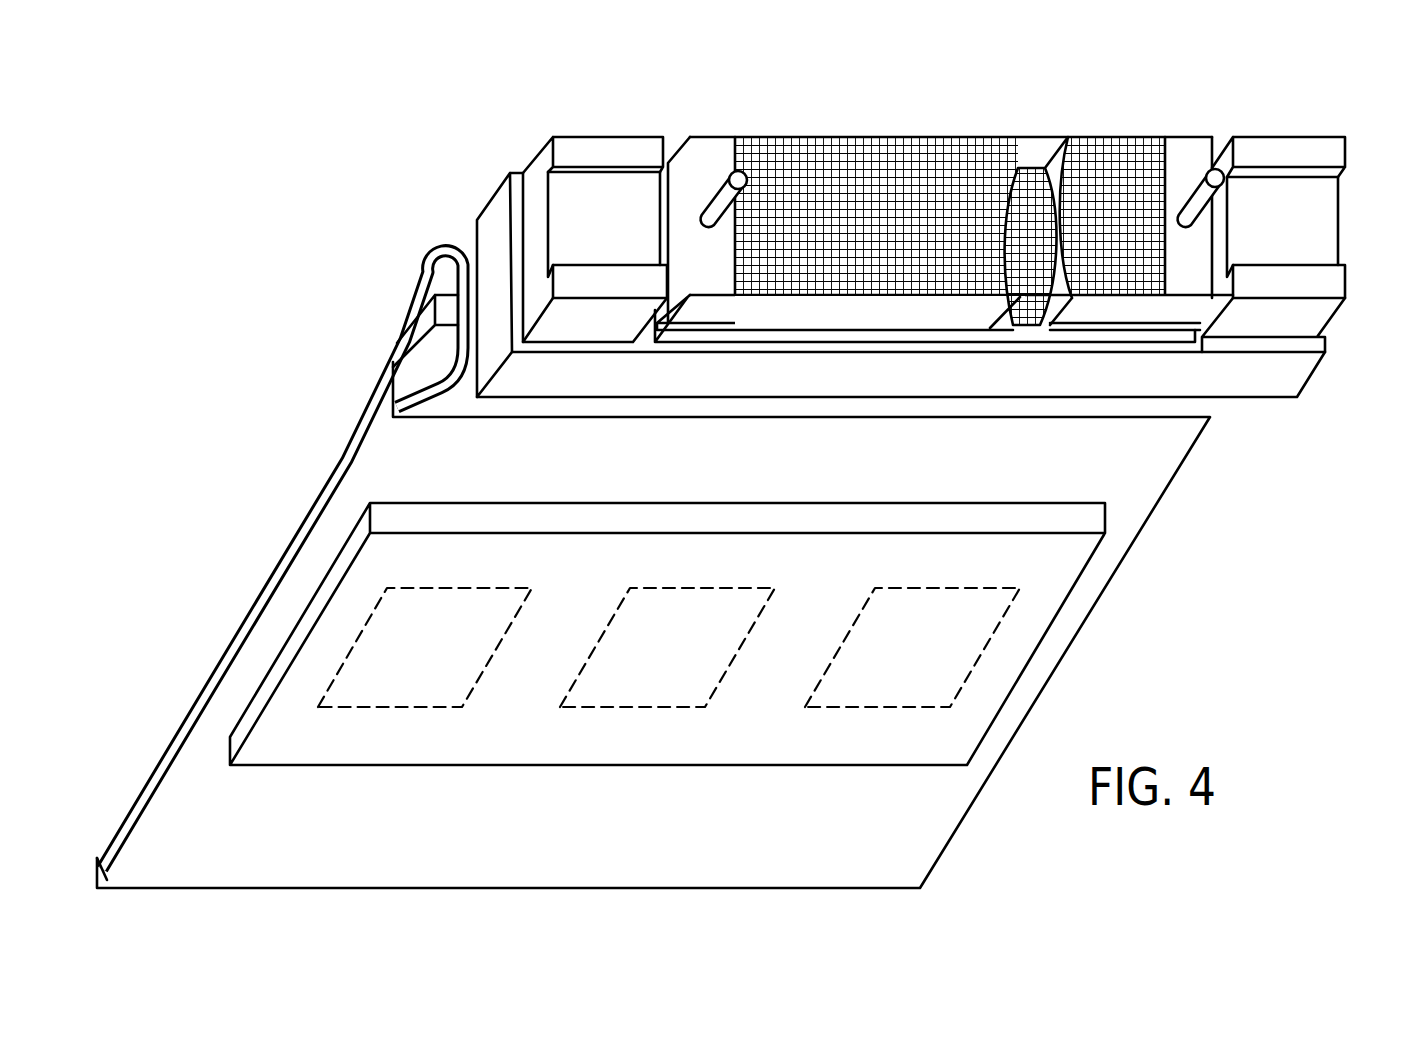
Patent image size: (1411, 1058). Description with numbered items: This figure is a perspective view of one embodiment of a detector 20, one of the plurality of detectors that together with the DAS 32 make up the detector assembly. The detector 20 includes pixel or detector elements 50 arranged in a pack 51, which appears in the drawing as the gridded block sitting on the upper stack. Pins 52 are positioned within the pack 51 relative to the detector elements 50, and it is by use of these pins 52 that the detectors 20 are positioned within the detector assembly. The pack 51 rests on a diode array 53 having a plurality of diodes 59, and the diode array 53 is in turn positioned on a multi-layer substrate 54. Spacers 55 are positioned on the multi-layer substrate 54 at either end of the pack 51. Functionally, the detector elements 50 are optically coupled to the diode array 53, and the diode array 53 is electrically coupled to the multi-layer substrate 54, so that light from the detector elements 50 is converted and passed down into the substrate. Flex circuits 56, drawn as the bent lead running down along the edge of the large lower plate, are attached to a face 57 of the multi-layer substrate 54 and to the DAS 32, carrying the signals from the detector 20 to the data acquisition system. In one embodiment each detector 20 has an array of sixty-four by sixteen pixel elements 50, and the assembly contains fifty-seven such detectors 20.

The detector 20 is at (1230, 108).
The DAS 32 is at (1085, 600).
The detector elements 50 is at (836, 150).
The pack 51 is at (733, 118).
The pins 52 is at (727, 172).
The diode array 53 is at (1172, 340).
The multi-layer substrate 54 is at (1296, 376).
The spacers 55 is at (600, 138).
The flex circuits 56 is at (420, 375).
The face 57 is at (476, 227).
The diodes 59 is at (1032, 165).